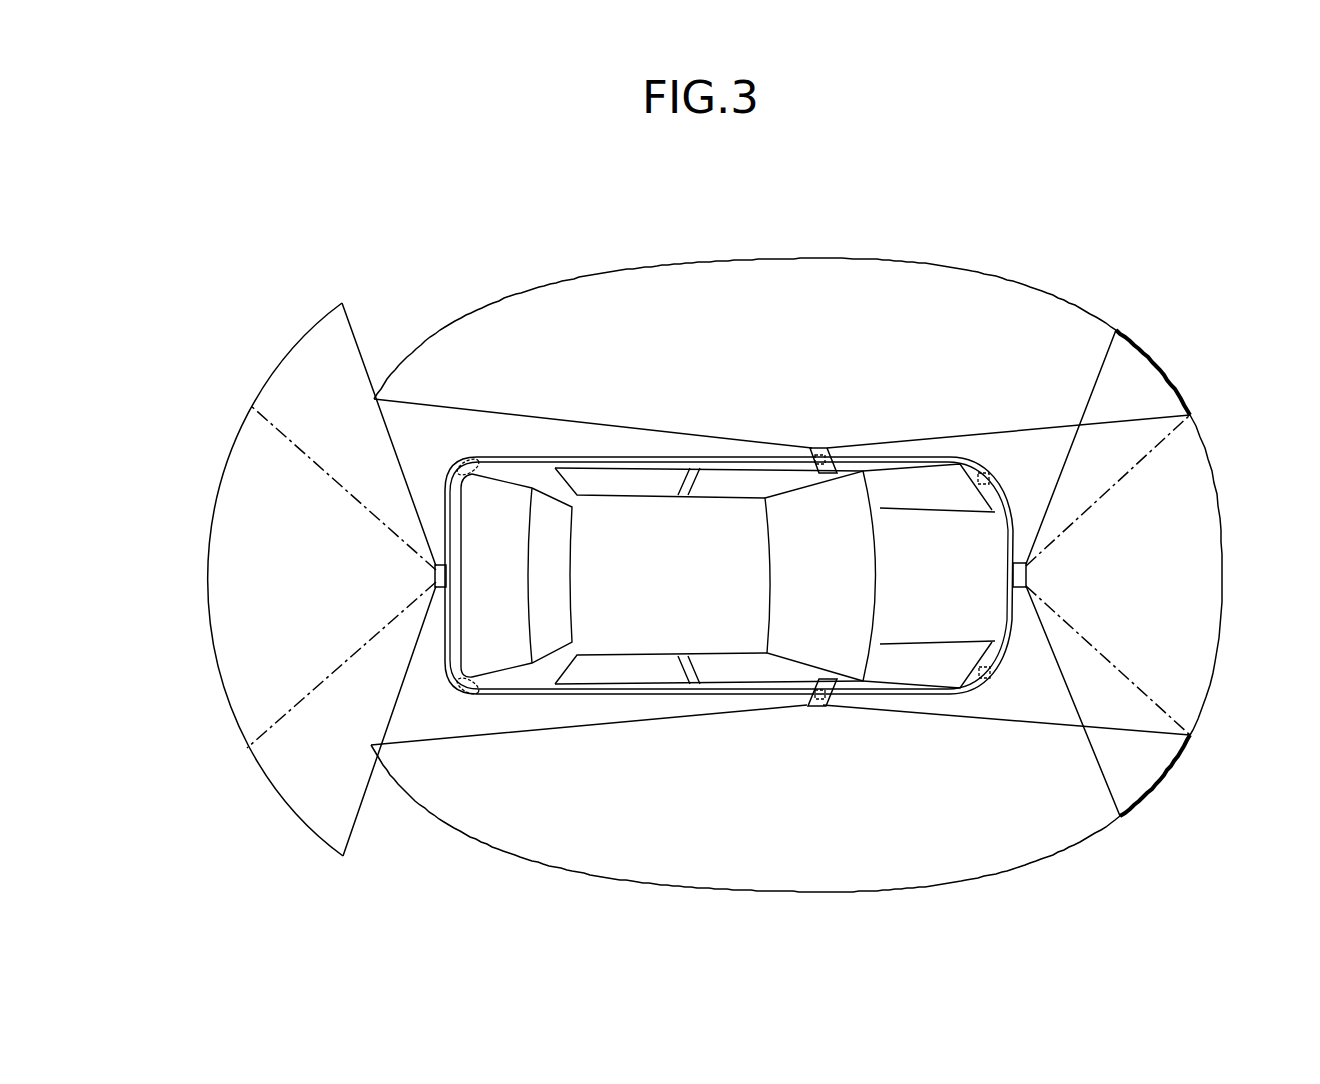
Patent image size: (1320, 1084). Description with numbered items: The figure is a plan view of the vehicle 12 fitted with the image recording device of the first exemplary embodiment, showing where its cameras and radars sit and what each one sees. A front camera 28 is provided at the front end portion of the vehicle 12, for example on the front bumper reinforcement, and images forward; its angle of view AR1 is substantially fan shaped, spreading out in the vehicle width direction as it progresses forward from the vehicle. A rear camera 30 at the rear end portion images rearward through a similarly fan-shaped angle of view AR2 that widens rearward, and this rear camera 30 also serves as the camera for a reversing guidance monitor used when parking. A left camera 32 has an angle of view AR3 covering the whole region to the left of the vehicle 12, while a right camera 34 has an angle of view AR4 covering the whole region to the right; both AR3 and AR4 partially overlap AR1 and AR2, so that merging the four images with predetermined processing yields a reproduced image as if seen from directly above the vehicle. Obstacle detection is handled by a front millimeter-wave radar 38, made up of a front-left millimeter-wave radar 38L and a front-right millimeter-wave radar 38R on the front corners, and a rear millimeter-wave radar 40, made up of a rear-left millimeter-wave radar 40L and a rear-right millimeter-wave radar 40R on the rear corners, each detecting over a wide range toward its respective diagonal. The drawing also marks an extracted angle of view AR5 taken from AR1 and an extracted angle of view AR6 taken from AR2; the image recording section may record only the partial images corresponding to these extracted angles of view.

The vehicle 12 is at (832, 370).
The front camera 28 is at (1027, 574).
The rear camera 30 is at (434, 580).
The left camera 32 is at (815, 448).
The right camera 34 is at (816, 708).
The front millimeter-wave radar 38 is at (976, 579).
The front-left millimeter-wave radar 38L is at (985, 480).
The front-right millimeter-wave radar 38R is at (988, 680).
The rear millimeter-wave radar 40 is at (501, 571).
The rear-left millimeter-wave radar 40L is at (468, 462).
The rear-right millimeter-wave radar 40R is at (466, 690).
The angle of view of the front camera AR1 is at (1212, 480).
The angle of view of the rear camera AR2 is at (235, 434).
The angle of view of the left camera AR3 is at (552, 283).
The angle of view of the right camera AR4 is at (547, 863).
The extracted angle of view AR5 is at (1128, 470).
The extracted angle of view AR6 is at (283, 712).